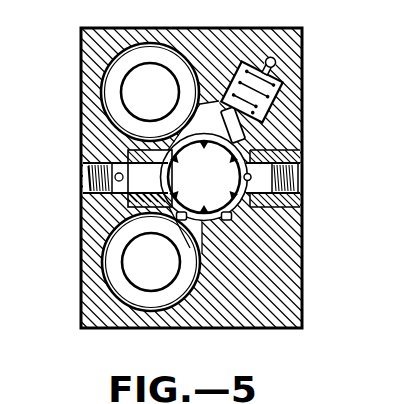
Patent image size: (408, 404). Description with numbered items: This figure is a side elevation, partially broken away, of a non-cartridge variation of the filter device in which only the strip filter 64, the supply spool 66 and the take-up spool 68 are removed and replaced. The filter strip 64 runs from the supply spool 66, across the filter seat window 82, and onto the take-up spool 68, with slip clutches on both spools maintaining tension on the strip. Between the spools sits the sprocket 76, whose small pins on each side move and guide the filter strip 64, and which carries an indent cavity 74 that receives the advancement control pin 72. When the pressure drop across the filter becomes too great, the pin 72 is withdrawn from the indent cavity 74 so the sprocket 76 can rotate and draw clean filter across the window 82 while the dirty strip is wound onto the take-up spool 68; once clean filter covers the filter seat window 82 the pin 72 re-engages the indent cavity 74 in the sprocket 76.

The strip filter 64 is at (118, 229).
The supply spool 66 is at (158, 58).
The take-up spool 68 is at (158, 295).
The advancement control pin 72 is at (246, 137).
The indent cavity 74 is at (256, 233).
The sprocket 76 is at (242, 209).
The filter seat window 82 is at (131, 201).